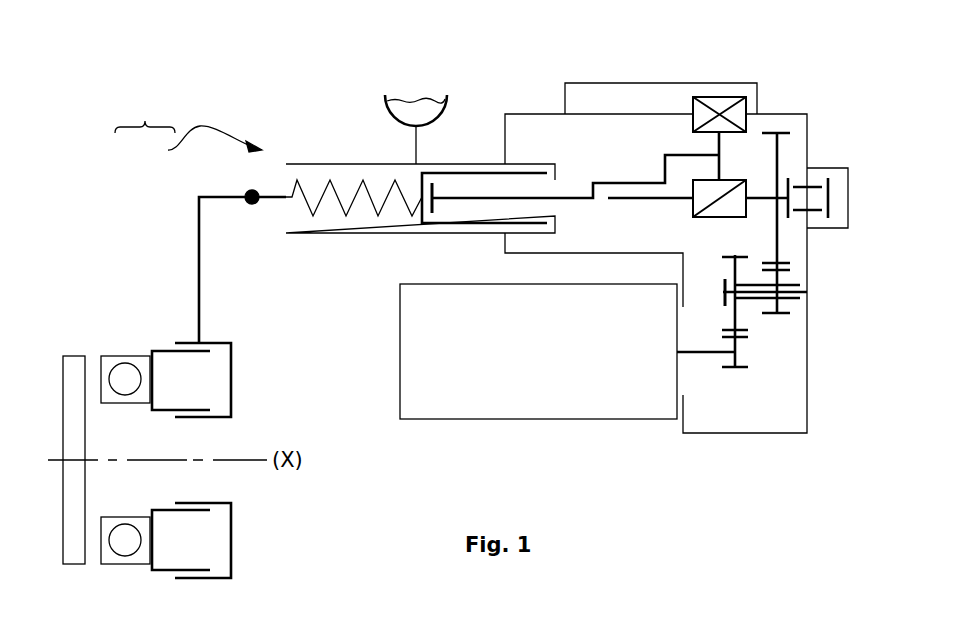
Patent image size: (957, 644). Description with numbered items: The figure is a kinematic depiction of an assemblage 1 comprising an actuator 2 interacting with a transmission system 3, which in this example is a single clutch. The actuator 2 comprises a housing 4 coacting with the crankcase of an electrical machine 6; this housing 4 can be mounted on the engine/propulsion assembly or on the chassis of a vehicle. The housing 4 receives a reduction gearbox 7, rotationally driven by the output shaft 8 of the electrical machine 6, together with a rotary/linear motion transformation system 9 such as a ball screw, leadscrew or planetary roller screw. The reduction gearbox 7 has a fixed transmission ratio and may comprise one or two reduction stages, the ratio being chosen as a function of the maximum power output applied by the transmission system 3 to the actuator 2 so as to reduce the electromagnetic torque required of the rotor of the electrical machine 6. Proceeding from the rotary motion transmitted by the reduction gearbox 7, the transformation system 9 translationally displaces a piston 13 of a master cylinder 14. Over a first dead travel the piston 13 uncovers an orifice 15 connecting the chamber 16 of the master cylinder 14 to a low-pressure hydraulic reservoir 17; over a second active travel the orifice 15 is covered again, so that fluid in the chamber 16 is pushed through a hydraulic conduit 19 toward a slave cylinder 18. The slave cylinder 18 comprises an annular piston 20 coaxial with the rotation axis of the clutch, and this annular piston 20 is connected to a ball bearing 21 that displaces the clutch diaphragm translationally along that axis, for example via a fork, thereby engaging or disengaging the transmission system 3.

The assemblage 1 is at (145, 114).
The actuator 2 is at (207, 143).
The transmission system 3 is at (73, 362).
The housing 4 is at (766, 434).
The electrical machine 6 is at (582, 420).
The reduction gearbox 7 is at (782, 315).
The output shaft 8 is at (705, 353).
The rotary/linear motion transformation system 9 is at (768, 132).
The piston 13 is at (462, 225).
The master cylinder 14 is at (320, 164).
The orifice 15 is at (418, 158).
The chamber 16 is at (375, 187).
The low-pressure hydraulic reservoir 17 is at (417, 112).
The slave cylinder 18 is at (231, 352).
The hydraulic conduit 19 is at (199, 240).
The annular piston 20 is at (158, 352).
The ball bearing 21 is at (112, 355).